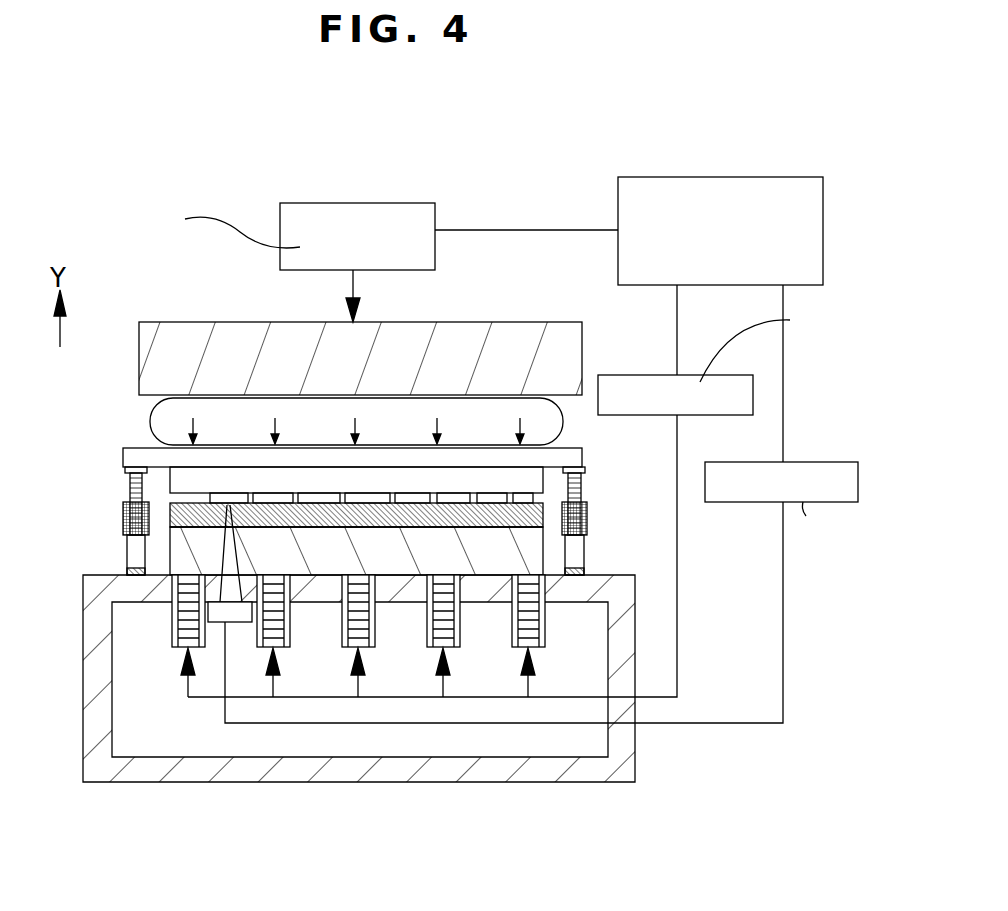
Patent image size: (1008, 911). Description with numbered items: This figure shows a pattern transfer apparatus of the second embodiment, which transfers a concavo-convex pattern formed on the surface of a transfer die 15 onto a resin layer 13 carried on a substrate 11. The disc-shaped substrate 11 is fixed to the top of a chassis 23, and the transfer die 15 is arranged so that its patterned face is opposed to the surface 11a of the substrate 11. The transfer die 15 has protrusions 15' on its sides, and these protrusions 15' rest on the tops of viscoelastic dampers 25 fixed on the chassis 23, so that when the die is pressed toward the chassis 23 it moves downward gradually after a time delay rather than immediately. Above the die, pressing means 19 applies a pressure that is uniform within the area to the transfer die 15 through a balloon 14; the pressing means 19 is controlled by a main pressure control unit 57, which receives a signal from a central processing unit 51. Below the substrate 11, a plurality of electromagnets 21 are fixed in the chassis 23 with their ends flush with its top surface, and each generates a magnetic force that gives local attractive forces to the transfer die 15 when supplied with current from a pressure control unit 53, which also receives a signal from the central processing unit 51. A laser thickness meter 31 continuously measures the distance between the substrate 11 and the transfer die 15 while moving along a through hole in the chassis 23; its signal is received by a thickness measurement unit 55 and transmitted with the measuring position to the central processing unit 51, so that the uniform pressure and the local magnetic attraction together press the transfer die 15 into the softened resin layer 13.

The substrate 11 is at (543, 548).
The surface of the substrate 11a is at (172, 512).
The resin layer 13 is at (543, 513).
The balloon 14 is at (152, 422).
The transfer die 15 is at (327, 446).
The protrusions 15' is at (389, 445).
The pressing means 19 is at (495, 322).
The electromagnets 21 is at (180, 649).
The chassis 23 is at (83, 604).
The viscoelastic dampers 25 is at (122, 502).
The laser thickness meter 31 is at (250, 623).
The central processing unit 51 is at (800, 178).
The pressure control unit 53 is at (712, 376).
The thickness measurement unit 55 is at (822, 463).
The main pressure control unit 57 is at (405, 203).